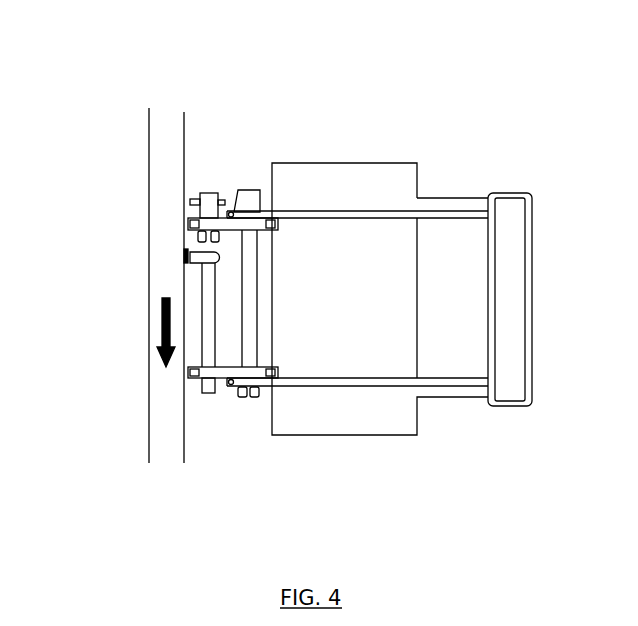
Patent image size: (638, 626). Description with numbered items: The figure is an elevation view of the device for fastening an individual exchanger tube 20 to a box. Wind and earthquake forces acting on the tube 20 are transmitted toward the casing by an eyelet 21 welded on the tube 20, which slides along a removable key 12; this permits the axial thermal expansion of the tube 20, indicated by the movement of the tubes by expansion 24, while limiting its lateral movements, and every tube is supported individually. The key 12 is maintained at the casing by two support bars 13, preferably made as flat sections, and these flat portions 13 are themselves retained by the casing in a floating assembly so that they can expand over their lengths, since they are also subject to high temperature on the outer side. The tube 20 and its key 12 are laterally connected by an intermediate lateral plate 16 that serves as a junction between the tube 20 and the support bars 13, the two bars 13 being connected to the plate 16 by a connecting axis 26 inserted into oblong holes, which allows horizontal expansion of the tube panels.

The removable key 12 is at (213, 393).
The support bar 13 is at (345, 355).
The intermediate lateral plate 16 is at (243, 192).
The exchanger tube 20 is at (177, 116).
The eyelet welded on tube 21 is at (183, 252).
The movement of the tubes by expansion 24 is at (162, 345).
The connecting axis 26 is at (250, 312).